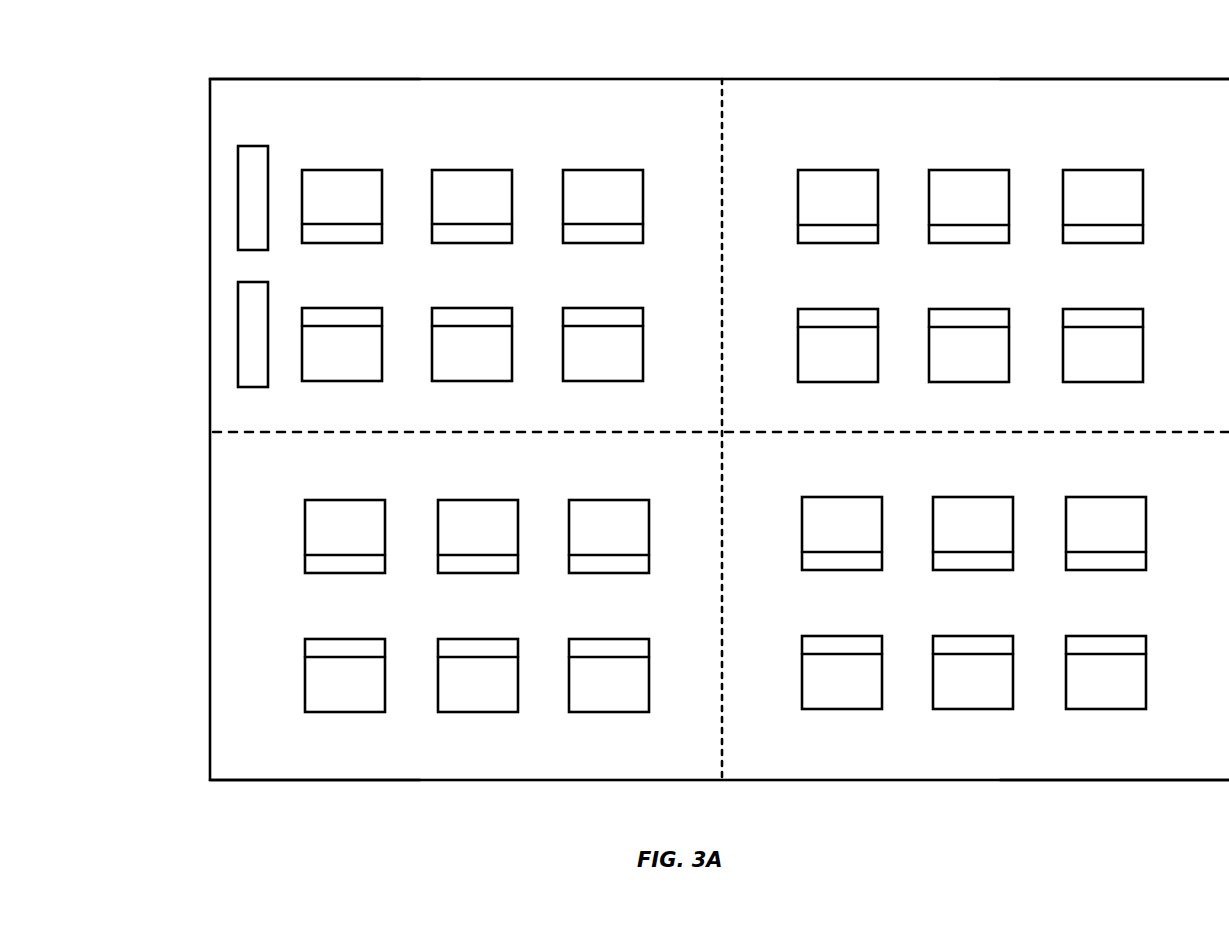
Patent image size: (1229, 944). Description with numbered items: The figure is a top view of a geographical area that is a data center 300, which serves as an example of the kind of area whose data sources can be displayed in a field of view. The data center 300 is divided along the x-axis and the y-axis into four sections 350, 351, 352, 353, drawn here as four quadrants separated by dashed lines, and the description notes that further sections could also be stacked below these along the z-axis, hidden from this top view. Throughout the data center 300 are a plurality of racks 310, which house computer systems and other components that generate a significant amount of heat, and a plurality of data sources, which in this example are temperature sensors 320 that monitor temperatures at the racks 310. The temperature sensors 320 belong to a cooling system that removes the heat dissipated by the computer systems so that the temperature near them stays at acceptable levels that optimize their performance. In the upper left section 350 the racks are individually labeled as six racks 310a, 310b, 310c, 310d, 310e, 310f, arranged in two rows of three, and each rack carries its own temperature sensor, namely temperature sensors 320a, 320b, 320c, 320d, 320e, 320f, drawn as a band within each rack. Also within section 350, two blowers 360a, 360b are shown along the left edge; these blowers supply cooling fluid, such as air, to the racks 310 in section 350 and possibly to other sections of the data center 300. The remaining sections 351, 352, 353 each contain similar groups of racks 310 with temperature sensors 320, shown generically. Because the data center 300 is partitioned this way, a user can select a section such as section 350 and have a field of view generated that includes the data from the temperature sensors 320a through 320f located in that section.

The data center 300 is at (698, 27).
The racks 310 is at (1080, 168).
The temperature sensors 320 is at (1093, 309).
The rack 310a is at (337, 170).
The rack 310b is at (467, 170).
The rack 310c is at (598, 170).
The rack 310d is at (337, 307).
The rack 310e is at (467, 307).
The rack 310f is at (598, 307).
The temperature sensor 320a is at (322, 237).
The temperature sensor 320b is at (452, 237).
The temperature sensor 320c is at (583, 237).
The temperature sensor 320d is at (357, 317).
The temperature sensor 320e is at (487, 317).
The temperature sensor 320f is at (618, 317).
The section 350 is at (260, 88).
The section 351 is at (1170, 95).
The section 352 is at (1182, 768).
The section 353 is at (243, 765).
The blower 360a is at (237, 183).
The blower 360b is at (237, 320).